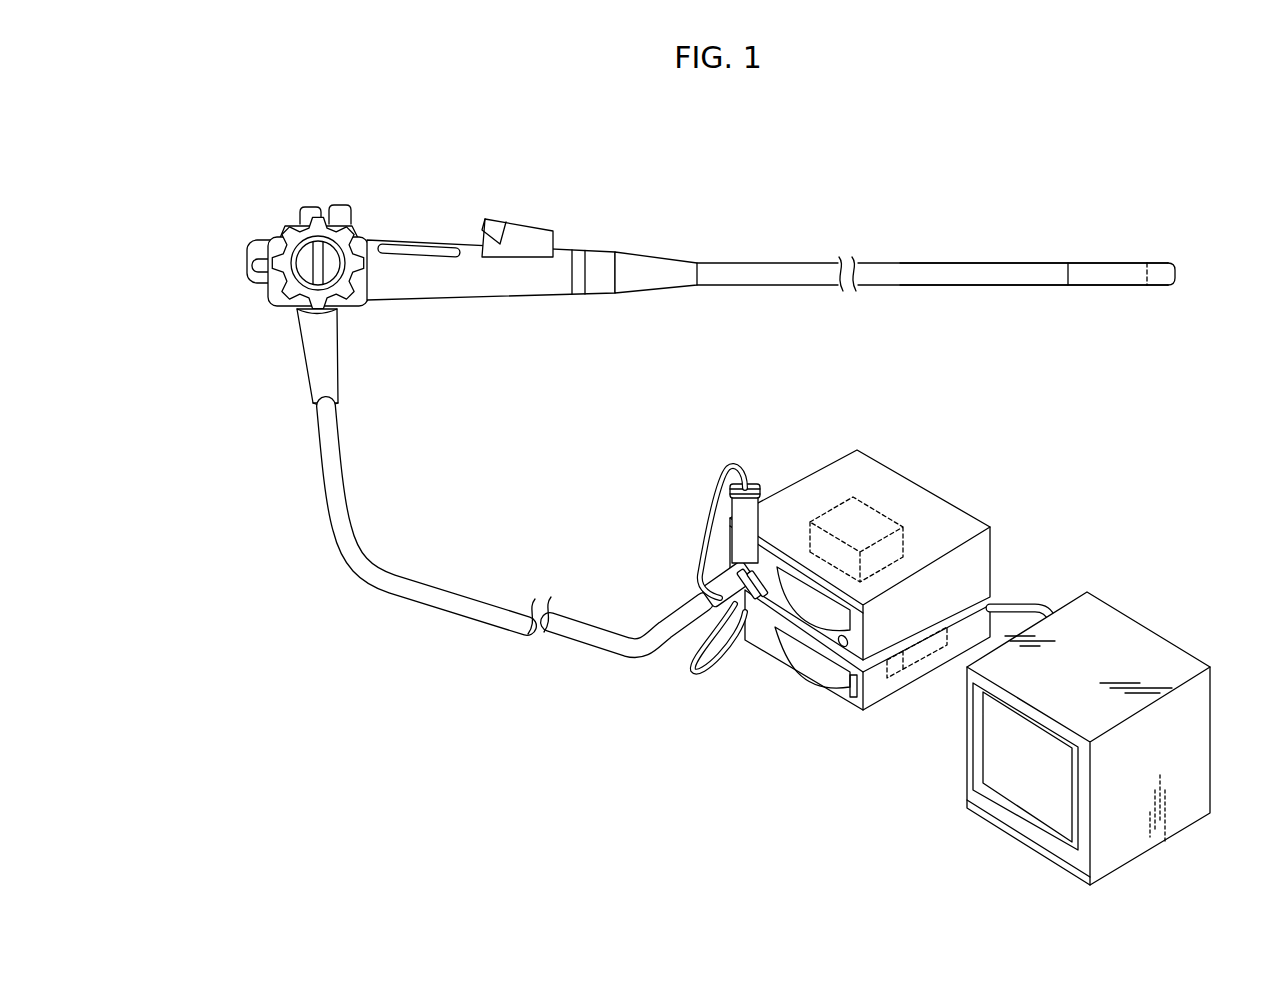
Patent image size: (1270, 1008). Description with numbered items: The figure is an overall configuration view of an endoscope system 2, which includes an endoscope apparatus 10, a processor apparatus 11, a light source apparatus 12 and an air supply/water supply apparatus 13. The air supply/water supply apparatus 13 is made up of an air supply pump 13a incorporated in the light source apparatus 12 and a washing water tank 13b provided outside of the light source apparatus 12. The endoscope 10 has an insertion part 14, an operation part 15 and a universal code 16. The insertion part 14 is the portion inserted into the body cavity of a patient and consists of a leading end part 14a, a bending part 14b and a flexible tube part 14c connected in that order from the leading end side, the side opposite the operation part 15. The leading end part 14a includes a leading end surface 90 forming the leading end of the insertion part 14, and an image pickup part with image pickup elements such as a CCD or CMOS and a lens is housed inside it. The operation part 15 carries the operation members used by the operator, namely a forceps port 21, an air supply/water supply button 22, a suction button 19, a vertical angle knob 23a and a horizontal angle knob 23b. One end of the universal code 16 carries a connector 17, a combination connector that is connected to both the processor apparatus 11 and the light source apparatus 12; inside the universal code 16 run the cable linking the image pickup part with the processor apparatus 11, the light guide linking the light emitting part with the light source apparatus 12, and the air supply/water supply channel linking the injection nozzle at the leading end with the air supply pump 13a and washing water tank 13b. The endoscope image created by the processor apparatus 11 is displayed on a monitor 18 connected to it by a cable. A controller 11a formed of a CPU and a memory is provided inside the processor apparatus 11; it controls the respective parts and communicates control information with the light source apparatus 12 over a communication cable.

The endoscope system 2 is at (418, 692).
The endoscope apparatus 10 is at (718, 256).
The processor apparatus 11 is at (852, 682).
The controller 11a is at (918, 665).
The light source apparatus 12 is at (860, 527).
The air supply/water supply apparatus 13 is at (775, 505).
The air supply pump 13a is at (840, 497).
The washing water tank 13b is at (747, 478).
The insertion part 14 is at (955, 262).
The leading end part 14a is at (1165, 287).
The bending part 14b is at (1092, 287).
The flexible tube part 14c is at (948, 287).
The operation part 15 is at (433, 292).
The universal code 16 is at (340, 447).
The connector 17 is at (722, 583).
The monitor 18 is at (1133, 632).
The suction button 19 is at (307, 207).
The forceps port 21 is at (484, 227).
The air supply/water supply button 22 is at (336, 206).
The vertical angle knob 23a is at (250, 250).
The horizontal angle knob 23b is at (283, 228).
The leading end surface 90 is at (1180, 270).